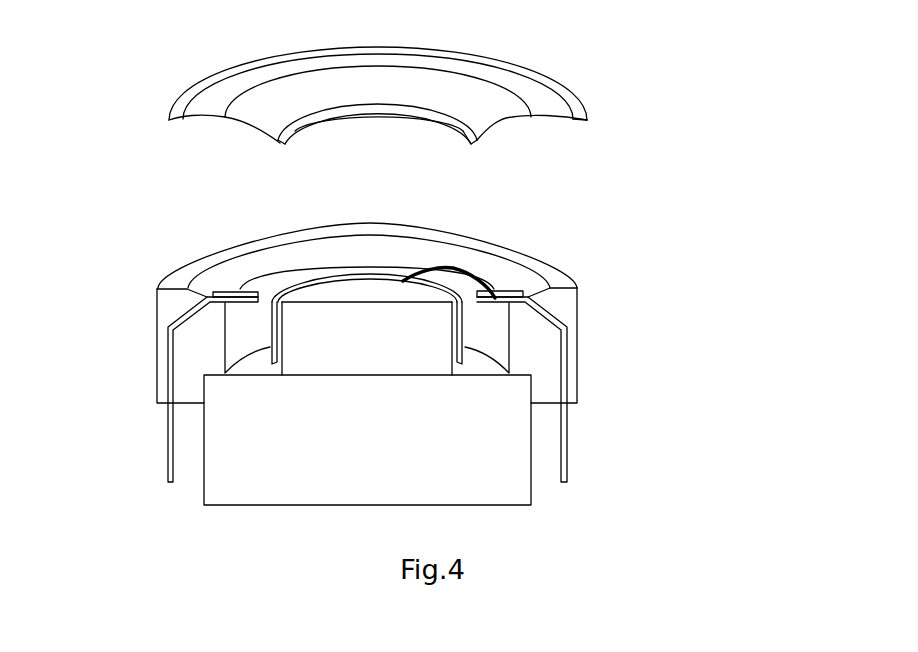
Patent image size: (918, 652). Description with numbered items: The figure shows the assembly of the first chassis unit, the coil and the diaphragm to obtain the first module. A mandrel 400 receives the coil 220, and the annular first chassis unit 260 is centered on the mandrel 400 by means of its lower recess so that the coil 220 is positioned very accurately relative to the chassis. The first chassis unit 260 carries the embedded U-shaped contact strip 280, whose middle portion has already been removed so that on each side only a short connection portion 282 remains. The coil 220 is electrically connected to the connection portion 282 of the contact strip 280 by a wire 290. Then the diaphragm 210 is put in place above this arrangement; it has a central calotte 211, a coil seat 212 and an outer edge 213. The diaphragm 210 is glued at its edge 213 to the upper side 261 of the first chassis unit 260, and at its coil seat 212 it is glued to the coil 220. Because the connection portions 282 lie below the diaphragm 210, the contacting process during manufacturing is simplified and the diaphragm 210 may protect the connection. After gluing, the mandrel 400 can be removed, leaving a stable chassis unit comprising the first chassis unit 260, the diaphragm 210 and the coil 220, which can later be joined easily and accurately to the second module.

The diaphragm 210 is at (378, 95).
The calotte 211 is at (432, 107).
The coil seat 212 is at (478, 145).
The edge 213 is at (580, 112).
The coil 220 is at (377, 272).
The first chassis unit 260 is at (157, 322).
The upper side 261 is at (182, 268).
The contact strip 280 is at (567, 443).
The connection portion 282 is at (513, 290).
The wire 290 is at (490, 268).
The mandrel 400 is at (511, 440).